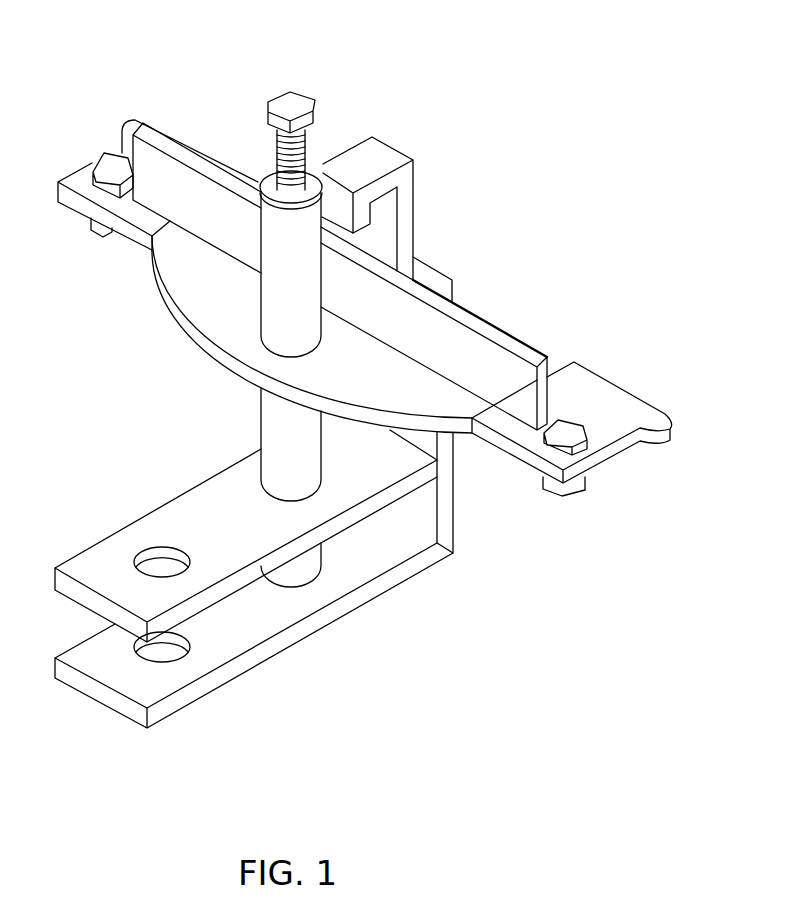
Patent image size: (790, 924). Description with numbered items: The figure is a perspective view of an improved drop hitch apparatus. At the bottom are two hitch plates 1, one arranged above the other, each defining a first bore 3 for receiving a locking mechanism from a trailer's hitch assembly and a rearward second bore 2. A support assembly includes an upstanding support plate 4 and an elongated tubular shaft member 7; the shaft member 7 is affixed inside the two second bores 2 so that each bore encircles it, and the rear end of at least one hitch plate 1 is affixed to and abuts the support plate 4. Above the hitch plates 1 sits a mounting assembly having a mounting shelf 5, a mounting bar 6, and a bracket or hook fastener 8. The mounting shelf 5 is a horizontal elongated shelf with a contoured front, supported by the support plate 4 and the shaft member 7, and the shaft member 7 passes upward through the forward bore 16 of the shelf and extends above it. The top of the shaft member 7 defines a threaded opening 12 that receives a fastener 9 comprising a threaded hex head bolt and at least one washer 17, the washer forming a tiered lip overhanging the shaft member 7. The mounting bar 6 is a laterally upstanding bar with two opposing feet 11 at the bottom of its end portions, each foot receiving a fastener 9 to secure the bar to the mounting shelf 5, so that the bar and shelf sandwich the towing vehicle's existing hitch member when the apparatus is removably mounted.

The hitch plates 1 is at (268, 655).
The second bore 2 is at (326, 590).
The first bore 3 is at (188, 659).
The support plate 4 is at (452, 490).
The mounting shelf 5 is at (192, 283).
The mounting bar 6 is at (481, 324).
The shaft member 7 is at (273, 298).
The bracket or hook fastener 8 is at (385, 148).
The fastener 9 is at (278, 95).
The feet 11 is at (608, 463).
The threaded opening 12 is at (258, 180).
The forward bore 16 is at (242, 364).
The washer 17 is at (312, 186).